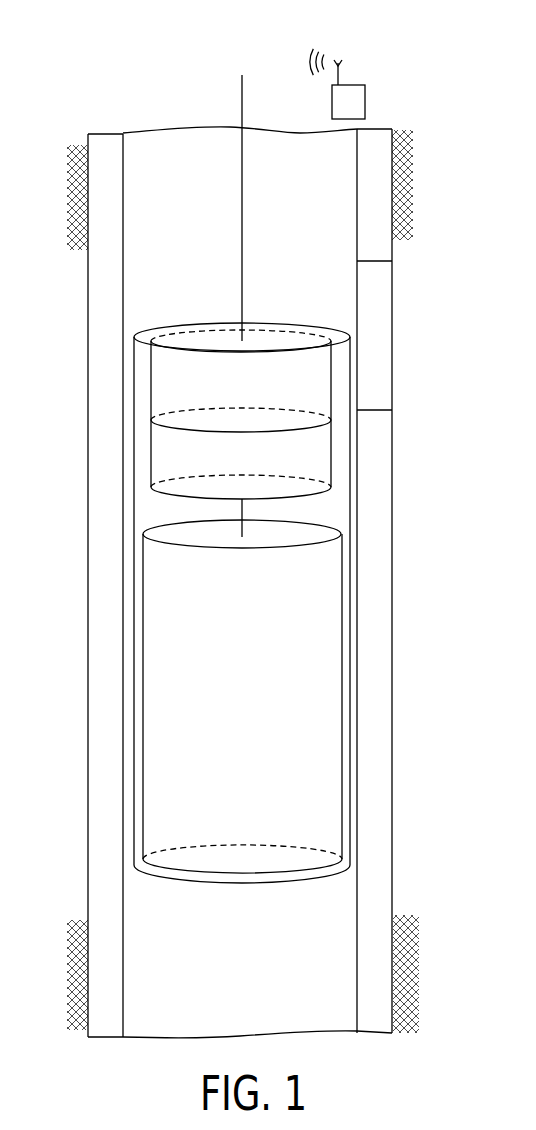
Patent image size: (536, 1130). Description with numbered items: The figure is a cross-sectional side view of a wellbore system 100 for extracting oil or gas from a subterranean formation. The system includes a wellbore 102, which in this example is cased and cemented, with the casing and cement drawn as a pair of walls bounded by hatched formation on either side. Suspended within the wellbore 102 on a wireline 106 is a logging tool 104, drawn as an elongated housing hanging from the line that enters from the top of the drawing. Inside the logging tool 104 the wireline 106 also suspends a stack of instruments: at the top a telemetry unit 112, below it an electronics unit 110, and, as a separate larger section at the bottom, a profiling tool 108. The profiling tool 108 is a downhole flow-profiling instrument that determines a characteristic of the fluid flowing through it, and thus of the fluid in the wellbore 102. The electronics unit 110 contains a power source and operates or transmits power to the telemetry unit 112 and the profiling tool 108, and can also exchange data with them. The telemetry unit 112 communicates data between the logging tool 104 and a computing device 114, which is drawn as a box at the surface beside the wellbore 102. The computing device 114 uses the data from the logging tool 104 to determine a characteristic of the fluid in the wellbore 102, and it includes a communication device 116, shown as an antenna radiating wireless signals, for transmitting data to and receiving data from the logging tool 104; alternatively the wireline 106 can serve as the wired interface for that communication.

The wellbore system 100 is at (115, 28).
The wellbore 102 is at (122, 563).
The logging tool 104 is at (341, 409).
The wireline 106 is at (240, 88).
The profiling tool 108 is at (330, 628).
The electronics unit 110 is at (322, 465).
The telemetry unit 112 is at (317, 375).
The computing device 114 is at (357, 98).
The communication device 116 is at (340, 68).